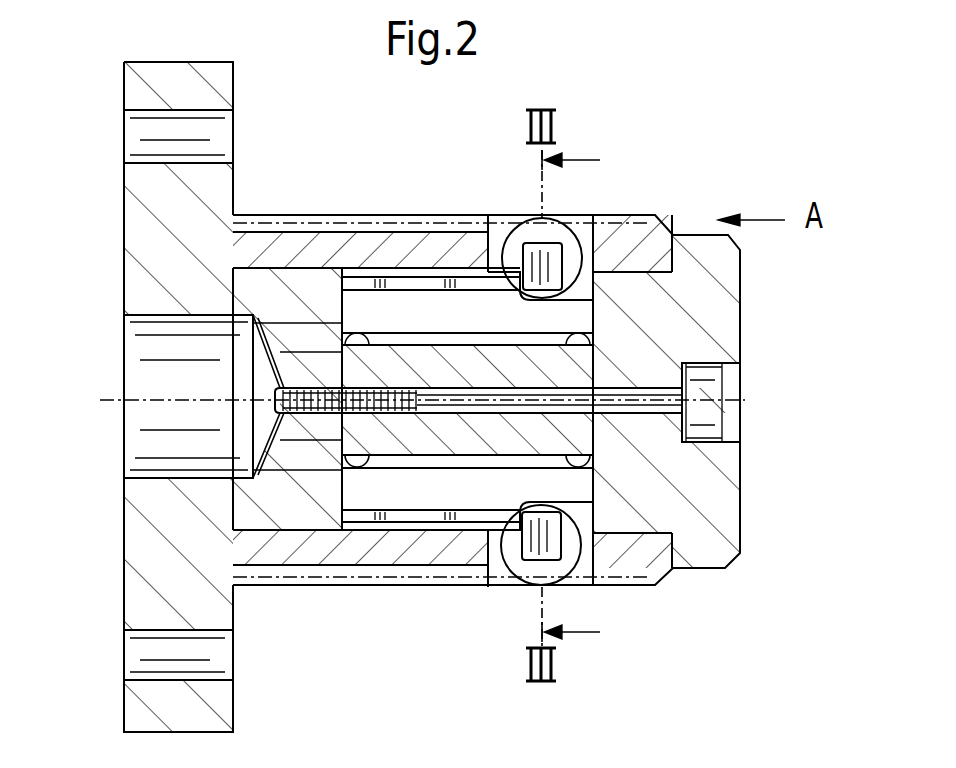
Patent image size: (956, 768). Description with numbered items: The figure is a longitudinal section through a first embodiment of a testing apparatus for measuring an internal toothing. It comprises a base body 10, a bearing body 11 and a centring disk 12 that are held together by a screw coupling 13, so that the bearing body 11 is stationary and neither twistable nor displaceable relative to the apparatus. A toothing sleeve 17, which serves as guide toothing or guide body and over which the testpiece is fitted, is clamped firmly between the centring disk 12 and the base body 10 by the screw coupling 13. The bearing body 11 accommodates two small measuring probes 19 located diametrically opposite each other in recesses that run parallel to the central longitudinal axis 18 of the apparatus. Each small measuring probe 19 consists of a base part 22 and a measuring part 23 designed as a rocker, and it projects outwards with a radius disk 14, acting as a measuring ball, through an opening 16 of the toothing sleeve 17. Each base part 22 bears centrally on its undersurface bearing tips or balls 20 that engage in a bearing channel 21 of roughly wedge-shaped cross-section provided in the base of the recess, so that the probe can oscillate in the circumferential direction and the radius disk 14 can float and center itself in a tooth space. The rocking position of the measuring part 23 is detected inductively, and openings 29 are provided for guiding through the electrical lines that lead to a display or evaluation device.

The base body 10 is at (145, 88).
The bearing body 11 is at (400, 445).
The centring disk 12 is at (695, 481).
The screw coupling 13 is at (712, 381).
The radius disk 14 is at (560, 236).
The opening 16 is at (493, 253).
The toothing sleeve 17 is at (465, 255).
The central longitudinal axis 18 is at (272, 400).
The small measuring probe 19 is at (340, 302).
The bearing tip or ball 20 is at (360, 334).
The bearing channel 21 is at (434, 335).
The base part 22 is at (411, 310).
The measuring part 23 is at (358, 284).
The opening 29 is at (255, 338).